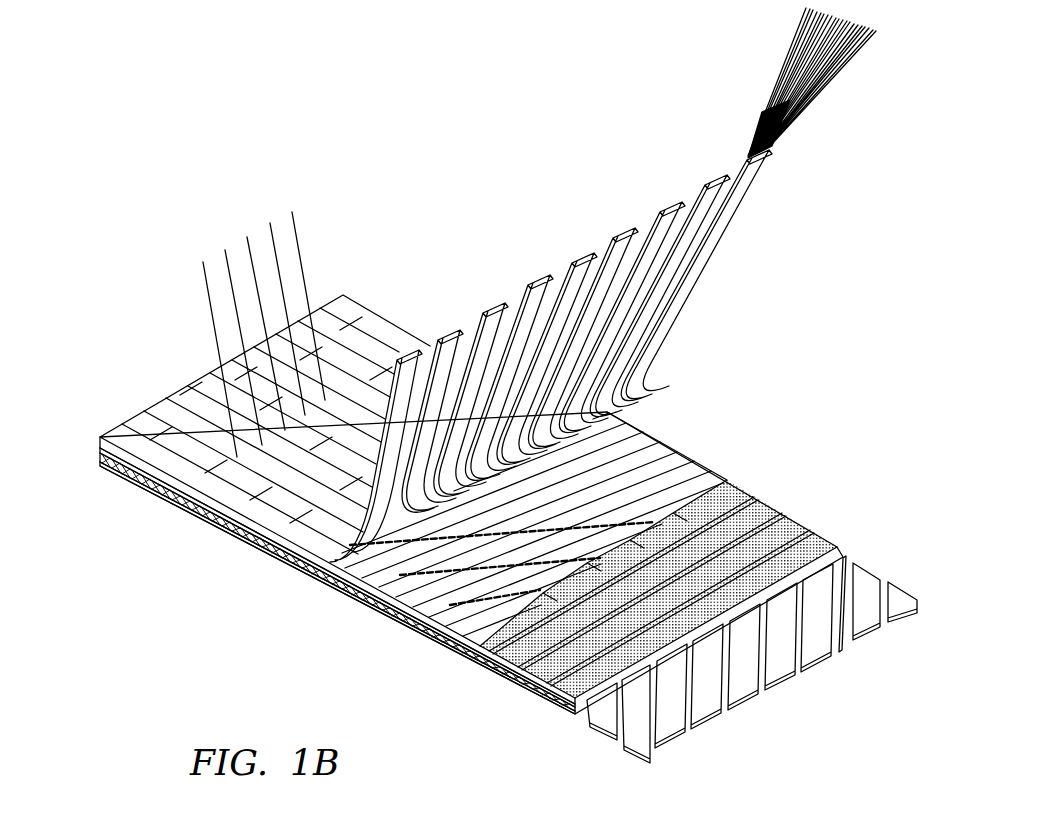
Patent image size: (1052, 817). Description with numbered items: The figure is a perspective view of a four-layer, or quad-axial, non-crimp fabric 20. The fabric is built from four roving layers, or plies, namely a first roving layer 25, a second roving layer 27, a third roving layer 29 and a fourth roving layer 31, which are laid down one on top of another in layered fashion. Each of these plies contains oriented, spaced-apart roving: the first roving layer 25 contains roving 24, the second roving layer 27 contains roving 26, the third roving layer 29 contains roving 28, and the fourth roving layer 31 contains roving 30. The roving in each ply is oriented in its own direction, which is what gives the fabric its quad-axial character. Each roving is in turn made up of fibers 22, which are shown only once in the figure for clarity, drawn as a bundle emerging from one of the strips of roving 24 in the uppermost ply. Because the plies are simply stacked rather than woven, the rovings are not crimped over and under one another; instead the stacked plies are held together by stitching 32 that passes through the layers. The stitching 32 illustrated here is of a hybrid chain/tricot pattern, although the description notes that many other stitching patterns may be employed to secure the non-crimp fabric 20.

The non-crimp fabric 20 is at (472, 243).
The fibers 22 is at (787, 87).
The roving 24 is at (727, 232).
The roving layer 25 is at (100, 439).
The roving 26 is at (460, 598).
The roving layer 27 is at (100, 450).
The roving 28 is at (760, 520).
The roving layer 29 is at (100, 458).
The roving 30 is at (865, 595).
The roving layer 31 is at (100, 464).
The stitching 32 is at (365, 390).